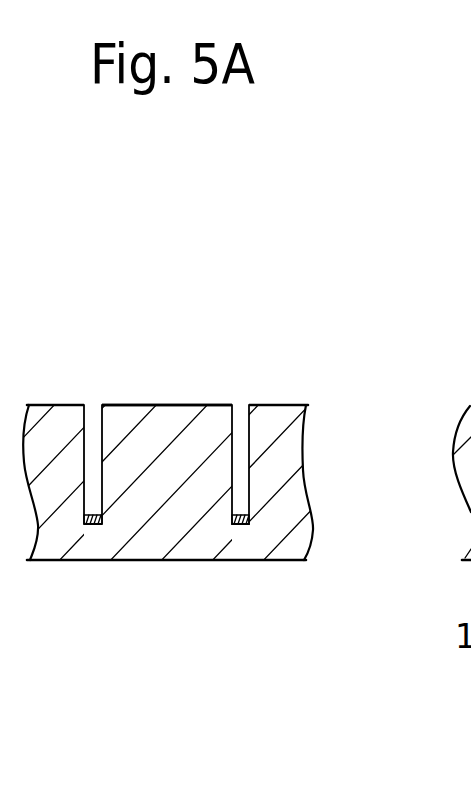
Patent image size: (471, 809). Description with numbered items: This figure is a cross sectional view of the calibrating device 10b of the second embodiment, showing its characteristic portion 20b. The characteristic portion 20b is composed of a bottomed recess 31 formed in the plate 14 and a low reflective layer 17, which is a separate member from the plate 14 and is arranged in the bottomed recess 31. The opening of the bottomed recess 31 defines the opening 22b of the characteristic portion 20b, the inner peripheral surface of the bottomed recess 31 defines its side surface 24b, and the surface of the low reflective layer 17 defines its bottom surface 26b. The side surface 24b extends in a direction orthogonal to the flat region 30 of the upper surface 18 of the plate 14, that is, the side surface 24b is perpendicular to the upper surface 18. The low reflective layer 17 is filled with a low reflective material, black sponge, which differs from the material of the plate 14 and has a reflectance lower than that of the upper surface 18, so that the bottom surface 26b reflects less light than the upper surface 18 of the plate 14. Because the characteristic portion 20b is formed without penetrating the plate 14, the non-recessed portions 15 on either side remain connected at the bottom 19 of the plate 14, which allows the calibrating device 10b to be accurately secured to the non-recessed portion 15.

The calibrating device 10b is at (306, 232).
The plate 14 is at (313, 533).
The non-recessed portion 15 is at (187, 404).
The low reflective layer 17 is at (254, 522).
The upper surface 18 is at (290, 404).
The bottom 19 is at (63, 533).
The characteristic portion 20b is at (288, 663).
The opening 22b is at (178, 517).
The side surface 24b is at (231, 478).
The bottom surface 26b is at (240, 528).
The flat region 30 is at (124, 404).
The bottomed recess 31 is at (238, 455).